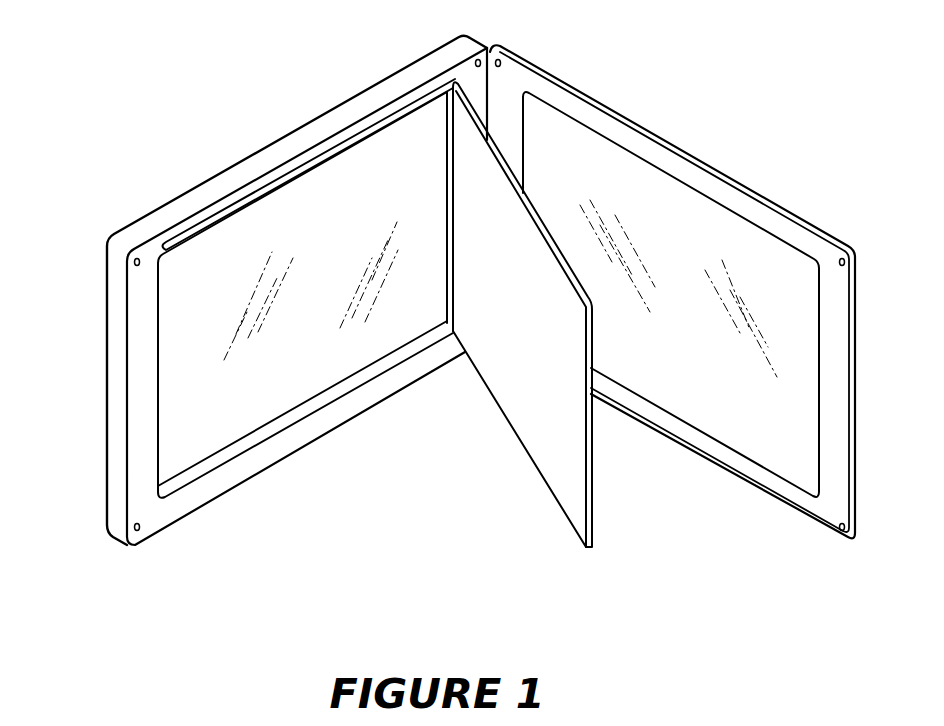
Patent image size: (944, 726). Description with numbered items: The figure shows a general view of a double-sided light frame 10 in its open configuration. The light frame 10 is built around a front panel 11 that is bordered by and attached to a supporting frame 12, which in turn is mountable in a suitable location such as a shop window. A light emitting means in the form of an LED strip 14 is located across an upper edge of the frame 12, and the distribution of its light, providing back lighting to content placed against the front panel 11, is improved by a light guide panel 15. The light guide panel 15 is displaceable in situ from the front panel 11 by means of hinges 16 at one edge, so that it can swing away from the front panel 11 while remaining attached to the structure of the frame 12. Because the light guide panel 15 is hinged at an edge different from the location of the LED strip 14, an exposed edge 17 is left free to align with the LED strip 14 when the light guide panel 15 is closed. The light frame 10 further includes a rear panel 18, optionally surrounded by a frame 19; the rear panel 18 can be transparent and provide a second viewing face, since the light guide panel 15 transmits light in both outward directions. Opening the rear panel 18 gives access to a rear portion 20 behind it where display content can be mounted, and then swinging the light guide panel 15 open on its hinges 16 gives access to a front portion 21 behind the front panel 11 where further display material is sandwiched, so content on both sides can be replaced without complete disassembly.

The light frame 10 is at (268, 78).
The front panel 11 is at (305, 295).
The supporting frame 12 is at (116, 469).
The LED strip 14 is at (196, 230).
The light guide panel 15 is at (563, 478).
The hinges 16 is at (447, 152).
The exposed edge 17 is at (540, 213).
The rear panel 18 is at (671, 294).
The frame 19 is at (747, 204).
The rear portion 20 is at (798, 468).
The front portion 21 is at (207, 440).